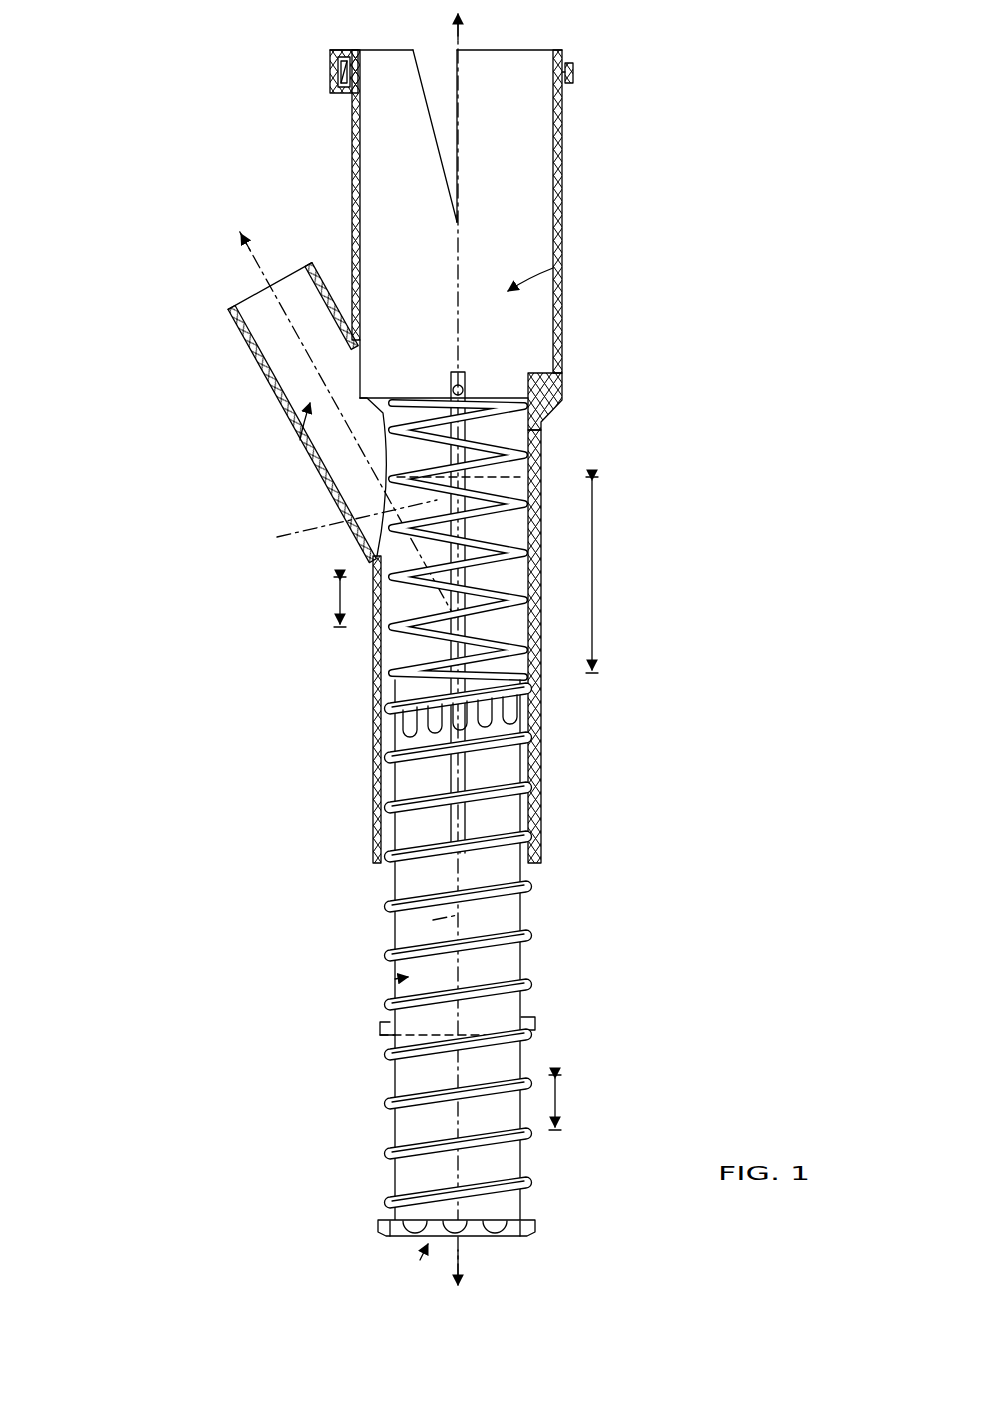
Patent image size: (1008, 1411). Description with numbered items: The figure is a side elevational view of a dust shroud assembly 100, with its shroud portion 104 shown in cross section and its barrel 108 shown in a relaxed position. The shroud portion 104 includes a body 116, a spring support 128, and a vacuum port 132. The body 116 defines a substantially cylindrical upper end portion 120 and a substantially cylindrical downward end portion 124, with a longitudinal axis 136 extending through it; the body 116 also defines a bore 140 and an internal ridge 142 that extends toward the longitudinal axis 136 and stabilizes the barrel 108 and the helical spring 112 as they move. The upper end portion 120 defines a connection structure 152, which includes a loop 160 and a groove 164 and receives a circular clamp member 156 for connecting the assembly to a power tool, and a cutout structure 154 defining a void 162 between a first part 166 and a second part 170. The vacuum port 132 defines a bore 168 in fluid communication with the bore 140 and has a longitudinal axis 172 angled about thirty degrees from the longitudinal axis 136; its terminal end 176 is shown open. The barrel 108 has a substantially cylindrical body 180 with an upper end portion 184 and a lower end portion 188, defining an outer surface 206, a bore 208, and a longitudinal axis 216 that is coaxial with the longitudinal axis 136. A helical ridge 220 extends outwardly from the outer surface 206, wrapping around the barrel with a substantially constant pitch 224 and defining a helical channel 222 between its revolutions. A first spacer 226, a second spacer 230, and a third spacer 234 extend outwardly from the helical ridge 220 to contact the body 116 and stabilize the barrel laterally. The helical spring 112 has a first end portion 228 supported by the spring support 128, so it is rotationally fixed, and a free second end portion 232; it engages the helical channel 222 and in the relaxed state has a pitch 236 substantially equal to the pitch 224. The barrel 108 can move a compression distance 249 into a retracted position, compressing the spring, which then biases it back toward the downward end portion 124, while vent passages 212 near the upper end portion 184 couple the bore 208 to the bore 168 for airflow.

The dust shroud assembly 100 is at (800, 150).
The shroud portion 104 is at (352, 188).
The barrel 108 is at (527, 912).
The helical spring 112 is at (380, 448).
The body 116 is at (553, 268).
The upper end portion 120 is at (533, 47).
The downward end portion 124 is at (381, 862).
The spring support 128 is at (512, 400).
The vacuum port 132 is at (242, 338).
The longitudinal axis 136 is at (450, 242).
The bore 140 is at (561, 280).
The internal ridge 142 is at (562, 395).
The connection structure 152 is at (322, 42).
The cutout structure 154 is at (355, 138).
The circular clamp member 156 is at (574, 63).
The loop 160 is at (338, 72).
The void 162 is at (448, 122).
The groove 164 is at (576, 75).
The first part 166 is at (425, 103).
The bore 168 is at (308, 408).
The second part 170 is at (458, 98).
The longitudinal axis 172 is at (246, 242).
The terminal end 176 is at (236, 300).
The body 180 is at (418, 1122).
The upper end portion 184 is at (420, 667).
The lower end portion 188 is at (533, 1016).
The outer surface 206 is at (392, 1080).
The bore 208 is at (422, 1255).
The vent passage 212 is at (503, 718).
The longitudinal axis 216 is at (433, 920).
The helical ridge 220 is at (505, 970).
The helical channel 222 is at (400, 978).
The pitch 224 is at (560, 1100).
The first spacer 226 is at (395, 705).
The first end portion 228 is at (395, 402).
The second spacer 230 is at (505, 685).
The second end portion 232 is at (462, 853).
The third spacer 234 is at (523, 732).
The pitch 236 is at (336, 605).
The compression distance 249 is at (596, 575).